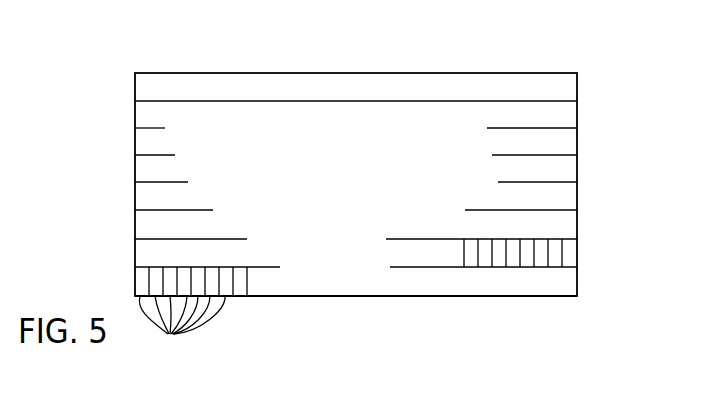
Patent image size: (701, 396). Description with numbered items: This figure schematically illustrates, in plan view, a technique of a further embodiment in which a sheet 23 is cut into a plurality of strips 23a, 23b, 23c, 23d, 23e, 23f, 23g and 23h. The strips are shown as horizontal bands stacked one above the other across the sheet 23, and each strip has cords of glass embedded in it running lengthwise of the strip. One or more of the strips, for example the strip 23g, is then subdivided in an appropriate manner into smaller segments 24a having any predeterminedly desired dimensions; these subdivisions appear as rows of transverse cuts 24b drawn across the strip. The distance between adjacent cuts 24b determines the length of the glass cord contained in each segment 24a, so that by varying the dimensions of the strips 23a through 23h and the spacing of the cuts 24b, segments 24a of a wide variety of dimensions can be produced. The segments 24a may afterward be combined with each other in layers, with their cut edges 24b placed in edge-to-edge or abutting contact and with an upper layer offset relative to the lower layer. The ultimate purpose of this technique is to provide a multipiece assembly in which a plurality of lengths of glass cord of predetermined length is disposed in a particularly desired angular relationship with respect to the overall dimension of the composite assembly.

The sheet 23 is at (546, 69).
The strip 23a is at (578, 90).
The strip 23b is at (578, 116).
The strip 23c is at (578, 143).
The strip 23d is at (578, 173).
The strip 23e is at (578, 201).
The strip 23f is at (578, 229).
The strip 23g is at (578, 257).
The strip 23h is at (578, 285).
The segments 24a is at (195, 331).
The cuts 24b is at (157, 268).